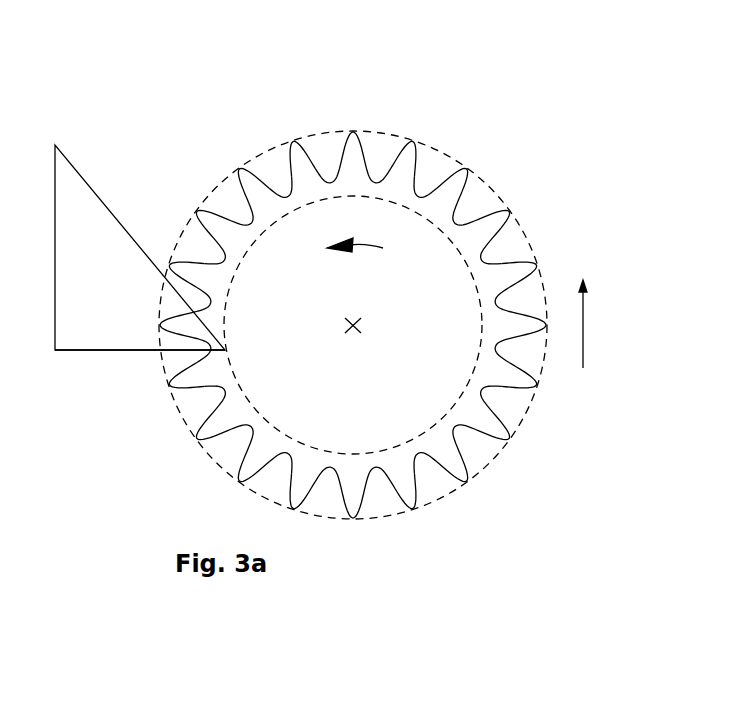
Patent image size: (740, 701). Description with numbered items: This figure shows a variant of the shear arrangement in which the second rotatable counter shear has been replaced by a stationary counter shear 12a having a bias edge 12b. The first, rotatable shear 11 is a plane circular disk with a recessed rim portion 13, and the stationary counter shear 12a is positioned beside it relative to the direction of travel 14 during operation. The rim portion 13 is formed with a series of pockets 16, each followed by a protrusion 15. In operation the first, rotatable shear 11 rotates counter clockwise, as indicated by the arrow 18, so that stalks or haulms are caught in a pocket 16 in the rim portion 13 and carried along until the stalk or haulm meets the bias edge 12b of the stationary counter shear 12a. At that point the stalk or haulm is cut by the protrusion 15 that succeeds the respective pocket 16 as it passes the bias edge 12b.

The first, rotatable shear 11 is at (368, 405).
The stationary counter shear 12a is at (102, 338).
The bias edge 12b is at (113, 210).
The recessed rim portion 13 is at (353, 266).
The direction of travel 14 is at (585, 333).
The protrusion 15 is at (295, 148).
The pocket 16 is at (328, 147).
The arrow 18 is at (372, 250).